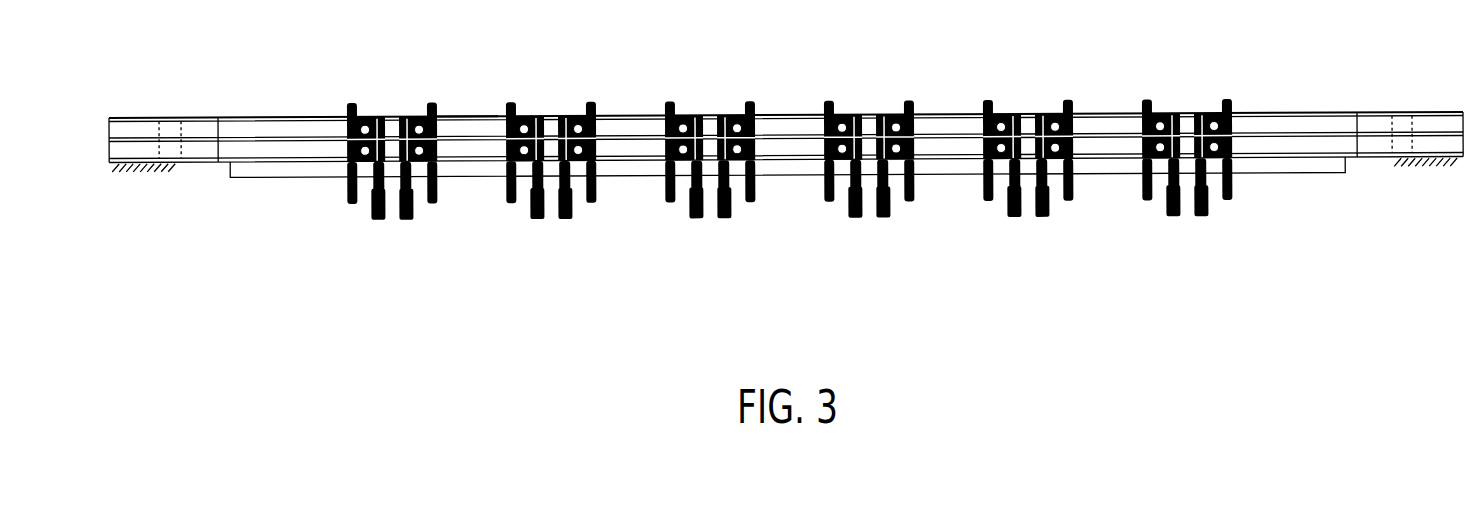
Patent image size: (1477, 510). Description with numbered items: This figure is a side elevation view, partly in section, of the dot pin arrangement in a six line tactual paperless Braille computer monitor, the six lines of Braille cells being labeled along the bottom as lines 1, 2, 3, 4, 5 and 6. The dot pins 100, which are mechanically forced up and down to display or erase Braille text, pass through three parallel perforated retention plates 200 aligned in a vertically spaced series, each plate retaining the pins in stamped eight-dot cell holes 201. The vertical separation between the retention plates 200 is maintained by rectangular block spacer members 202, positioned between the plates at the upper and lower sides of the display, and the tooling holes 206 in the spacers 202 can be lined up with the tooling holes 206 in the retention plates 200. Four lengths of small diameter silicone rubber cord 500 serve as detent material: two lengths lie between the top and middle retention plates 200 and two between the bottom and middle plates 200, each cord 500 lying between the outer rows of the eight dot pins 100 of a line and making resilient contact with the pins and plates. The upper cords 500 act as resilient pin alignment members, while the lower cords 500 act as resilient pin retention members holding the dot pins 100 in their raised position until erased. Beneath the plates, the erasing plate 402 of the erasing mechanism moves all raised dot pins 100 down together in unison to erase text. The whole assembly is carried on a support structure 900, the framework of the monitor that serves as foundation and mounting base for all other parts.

The dot pins 100 is at (378, 117).
The retention plates 200 is at (786, 159).
The stamped holes 201 is at (498, 115).
The spacer members 202 is at (202, 128).
The tooling holes 206 is at (170, 160).
The erasing plate 402 is at (268, 176).
The silicone rubber cord 500 is at (573, 125).
The support structure 900 is at (152, 173).
The module position 1 is at (391, 161).
The module position 2 is at (551, 171).
The module position 3 is at (710, 194).
The module position 4 is at (869, 193).
The module position 5 is at (1028, 193).
The module position 6 is at (1187, 192).